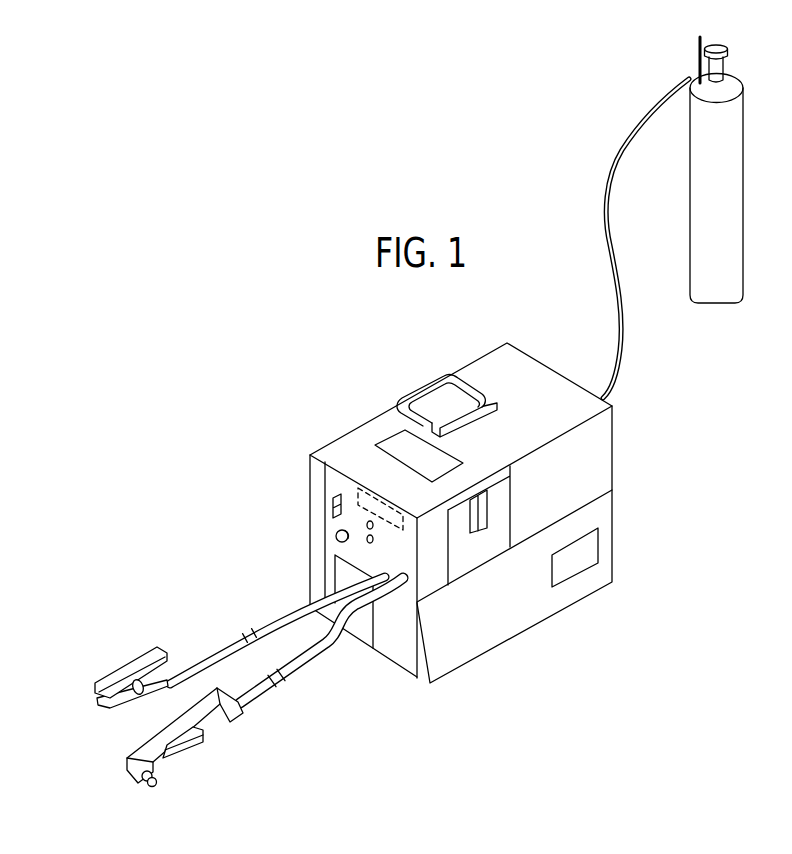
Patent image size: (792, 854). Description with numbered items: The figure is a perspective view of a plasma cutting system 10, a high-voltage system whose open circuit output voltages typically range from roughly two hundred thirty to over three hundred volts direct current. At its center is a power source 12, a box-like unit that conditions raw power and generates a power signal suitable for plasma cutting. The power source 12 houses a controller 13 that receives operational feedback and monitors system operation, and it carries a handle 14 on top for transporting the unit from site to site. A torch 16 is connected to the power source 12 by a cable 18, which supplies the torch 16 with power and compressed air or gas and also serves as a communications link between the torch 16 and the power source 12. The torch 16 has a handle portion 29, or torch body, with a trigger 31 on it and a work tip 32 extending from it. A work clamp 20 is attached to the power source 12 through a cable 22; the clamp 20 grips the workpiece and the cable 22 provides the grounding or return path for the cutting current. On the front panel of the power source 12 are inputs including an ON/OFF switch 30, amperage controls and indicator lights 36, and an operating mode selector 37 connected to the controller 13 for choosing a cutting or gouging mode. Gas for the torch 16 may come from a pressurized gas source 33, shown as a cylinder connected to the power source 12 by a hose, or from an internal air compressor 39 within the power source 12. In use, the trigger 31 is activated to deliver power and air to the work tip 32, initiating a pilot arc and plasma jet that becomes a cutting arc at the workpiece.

The plasma cutting system 10 is at (275, 380).
The power source 12 is at (538, 368).
The controller 13 is at (362, 487).
The handle 14 is at (438, 377).
The torch 16 is at (83, 758).
The cable 18 is at (343, 650).
The work clamp 20 is at (120, 664).
The cable 22 is at (212, 651).
The handle portion 29 is at (219, 703).
The ON/OFF switch 30 is at (333, 503).
The trigger 31 is at (192, 748).
The work tip 32 is at (160, 785).
The pressurized gas source 33 is at (703, 188).
The amperage controls and indicator lights 36 is at (363, 548).
The operating mode selector 37 is at (330, 535).
The internal air compressor 39 is at (583, 555).